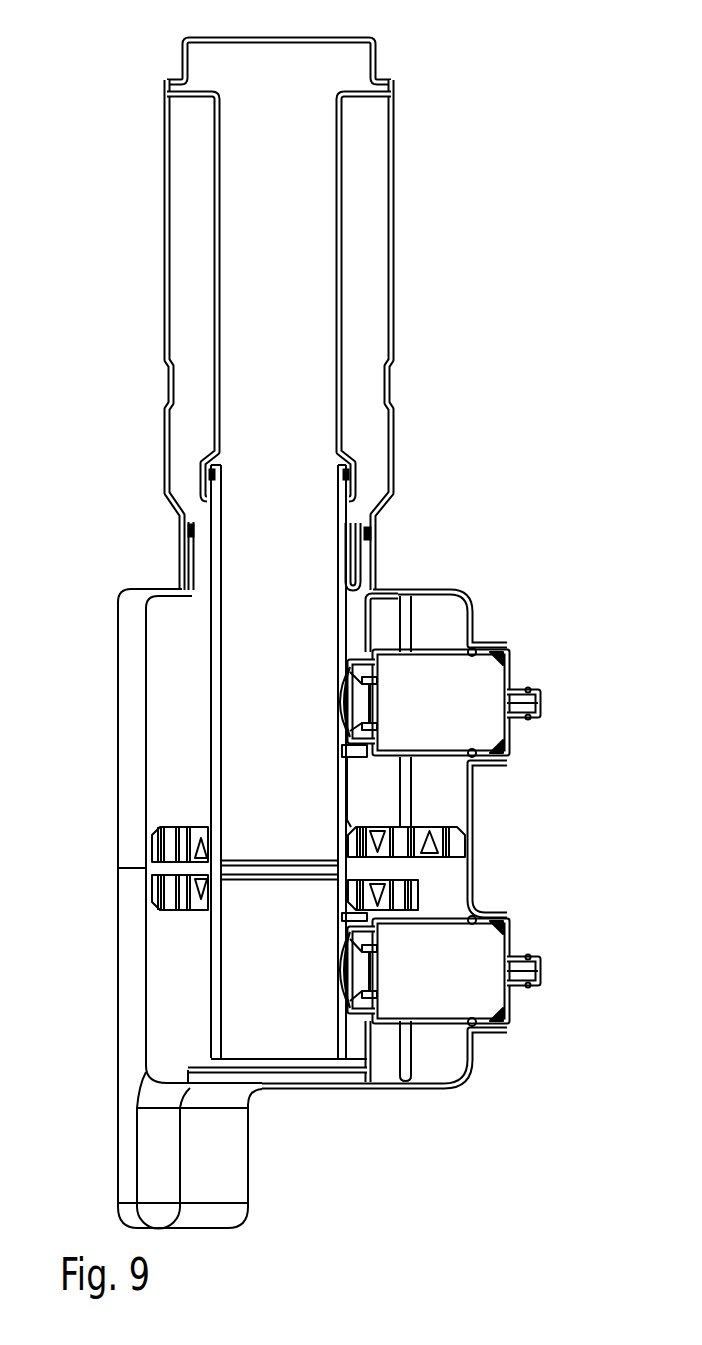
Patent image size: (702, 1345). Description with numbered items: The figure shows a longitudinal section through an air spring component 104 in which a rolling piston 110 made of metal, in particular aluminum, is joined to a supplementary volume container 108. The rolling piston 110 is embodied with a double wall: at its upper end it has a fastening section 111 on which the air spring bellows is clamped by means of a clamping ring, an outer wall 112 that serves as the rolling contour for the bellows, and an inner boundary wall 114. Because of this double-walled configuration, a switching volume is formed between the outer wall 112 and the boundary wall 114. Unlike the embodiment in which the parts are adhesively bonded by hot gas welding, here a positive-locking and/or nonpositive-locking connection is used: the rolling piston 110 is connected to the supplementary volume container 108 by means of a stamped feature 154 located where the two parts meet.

The air spring component 104 is at (471, 61).
The supplementary volume container 108 is at (509, 606).
The rolling piston 110 is at (423, 179).
The fastening section 111 is at (371, 63).
The outer wall 112 is at (395, 263).
The boundary wall 114 is at (341, 326).
The stamped feature 154 is at (374, 553).